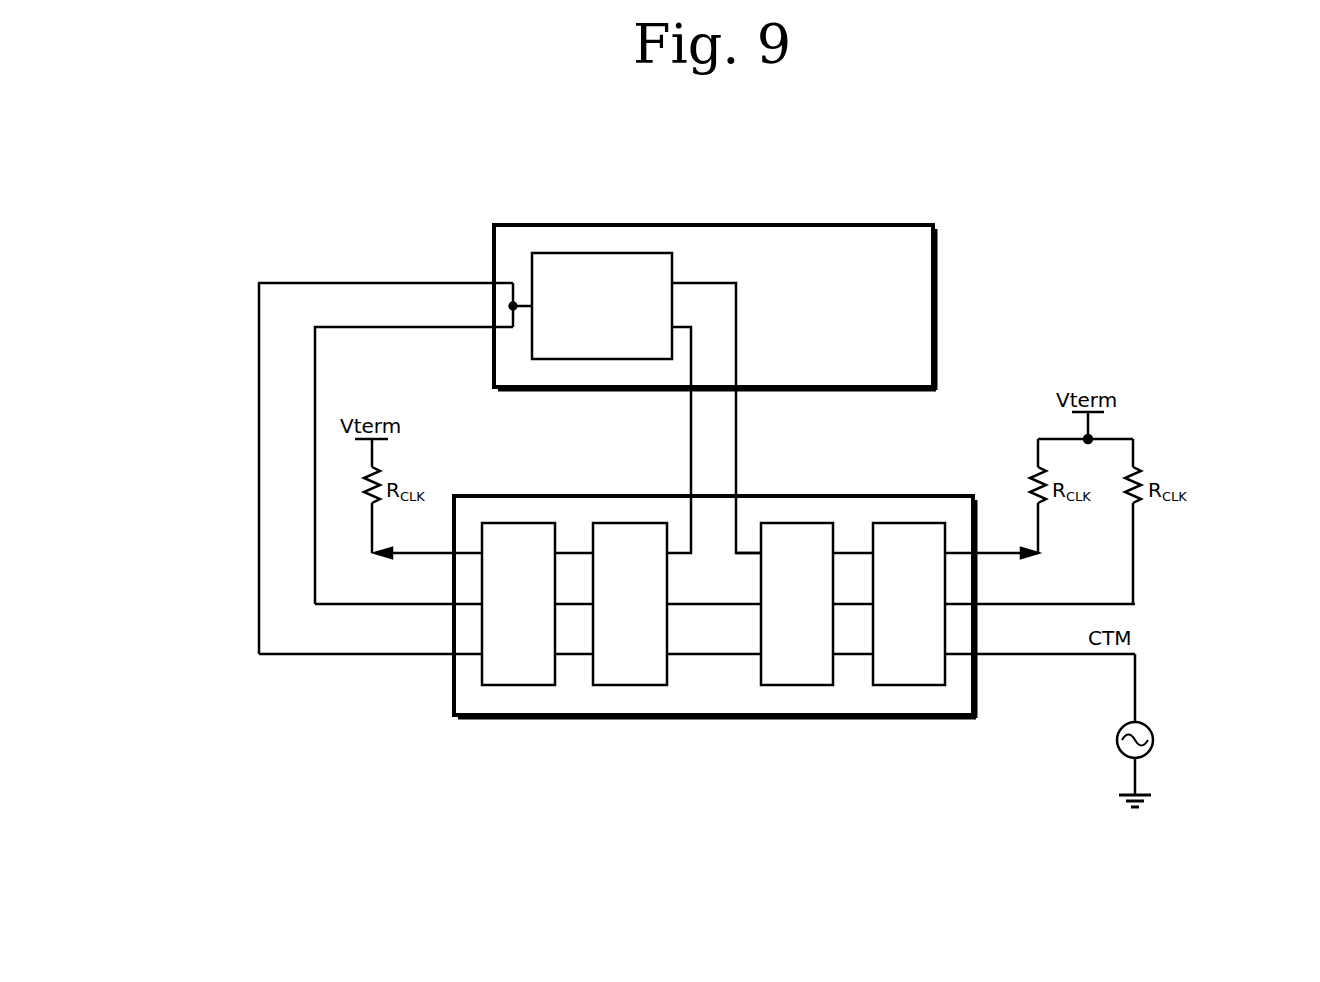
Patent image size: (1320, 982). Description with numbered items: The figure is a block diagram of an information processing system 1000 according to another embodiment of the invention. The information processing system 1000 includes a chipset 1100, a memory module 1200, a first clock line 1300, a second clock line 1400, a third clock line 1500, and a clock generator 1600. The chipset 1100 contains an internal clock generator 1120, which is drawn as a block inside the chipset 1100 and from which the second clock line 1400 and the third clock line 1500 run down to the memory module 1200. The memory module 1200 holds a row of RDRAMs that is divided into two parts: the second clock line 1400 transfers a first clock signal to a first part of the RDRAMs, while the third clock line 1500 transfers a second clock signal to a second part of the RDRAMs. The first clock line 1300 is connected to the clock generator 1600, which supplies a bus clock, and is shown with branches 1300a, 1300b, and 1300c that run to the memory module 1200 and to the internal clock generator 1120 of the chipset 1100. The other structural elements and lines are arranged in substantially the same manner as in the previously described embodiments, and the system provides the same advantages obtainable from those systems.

The information processing system 1000 is at (1188, 142).
The chipset 1100 is at (873, 225).
The internal clock generator 1120 is at (629, 316).
The memory module 1200 is at (913, 495).
The first clock line 1300 is at (1137, 678).
The clock signal line branch a 1300a is at (258, 358).
The clock signal line branch b 1300b is at (316, 358).
The clock signal line branch c 1300c is at (513, 283).
The second clock line 1400 is at (689, 420).
The third clock line 1500 is at (738, 420).
The clock generator 1600 is at (1117, 738).